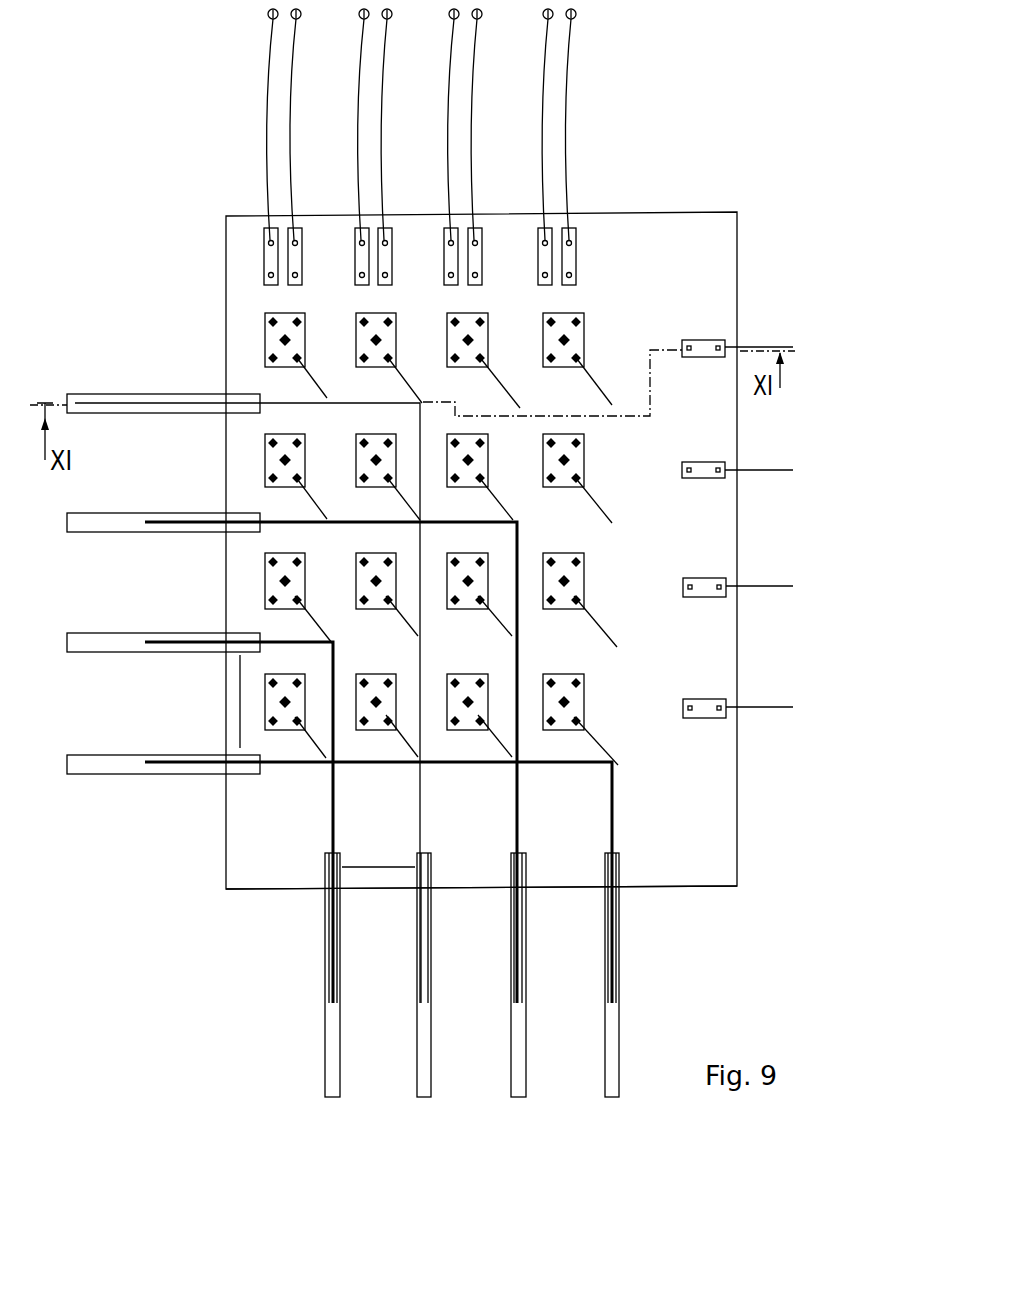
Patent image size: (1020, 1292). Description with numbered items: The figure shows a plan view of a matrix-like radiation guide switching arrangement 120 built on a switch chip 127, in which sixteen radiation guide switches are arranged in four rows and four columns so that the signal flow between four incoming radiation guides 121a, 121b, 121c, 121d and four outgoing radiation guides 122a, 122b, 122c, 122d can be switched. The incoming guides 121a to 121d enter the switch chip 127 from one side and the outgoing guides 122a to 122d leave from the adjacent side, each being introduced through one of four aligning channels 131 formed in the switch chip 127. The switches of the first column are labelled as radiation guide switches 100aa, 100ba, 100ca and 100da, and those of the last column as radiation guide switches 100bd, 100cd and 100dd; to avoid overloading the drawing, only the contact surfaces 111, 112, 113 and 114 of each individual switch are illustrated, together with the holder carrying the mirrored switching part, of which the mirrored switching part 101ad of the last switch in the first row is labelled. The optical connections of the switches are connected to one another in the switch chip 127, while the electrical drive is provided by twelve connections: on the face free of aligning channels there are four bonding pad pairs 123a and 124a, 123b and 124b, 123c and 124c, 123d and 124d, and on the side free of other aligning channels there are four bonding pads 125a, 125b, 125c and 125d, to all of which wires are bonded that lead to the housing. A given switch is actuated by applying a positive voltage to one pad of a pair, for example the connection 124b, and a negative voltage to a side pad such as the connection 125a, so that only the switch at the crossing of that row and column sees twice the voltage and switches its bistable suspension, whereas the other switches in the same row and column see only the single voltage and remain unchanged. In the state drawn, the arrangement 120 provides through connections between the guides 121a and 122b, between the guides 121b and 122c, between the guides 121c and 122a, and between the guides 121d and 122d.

The matrix-like arrangement 120 is at (702, 153).
The switch chip 127 is at (703, 889).
The incoming radiation guide 121a is at (110, 413).
The incoming radiation guide 121b is at (117, 532).
The incoming radiation guide 121c is at (112, 652).
The incoming radiation guide 121d is at (114, 774).
The outgoing radiation guide 122a is at (330, 1020).
The outgoing radiation guide 122b is at (422, 1020).
The outgoing radiation guide 122c is at (516, 1020).
The outgoing radiation guide 122d is at (610, 1020).
The bonding pad 123a is at (268, 240).
The bonding pad 123b is at (358, 240).
The bonding pad 123c is at (448, 240).
The bonding pad 123d is at (540, 240).
The bonding pad 124a is at (294, 228).
The bonding pad 124b is at (385, 228).
The bonding pad 124c is at (475, 228).
The bonding pad 124d is at (568, 228).
The bonding pad 125a is at (765, 348).
The bonding pad 125b is at (765, 470).
The bonding pad 125c is at (762, 586).
The bonding pad 125d is at (763, 707).
The radiation guide switch 100aa is at (261, 333).
The radiation guide switch 100ba is at (261, 462).
The radiation guide switch 100ca is at (261, 582).
The radiation guide switch 100da is at (290, 731).
The radiation guide switch 100bd is at (588, 461).
The radiation guide switch 100cd is at (622, 593).
The radiation guide switch 100dd is at (630, 684).
The mirrored switching part 101ad is at (608, 394).
The contact surface 111 is at (590, 303).
The contact surface 112 is at (568, 338).
The contact surface 113 is at (546, 366).
The contact surface 114 is at (547, 316).
The aligning channel 131 is at (241, 652).